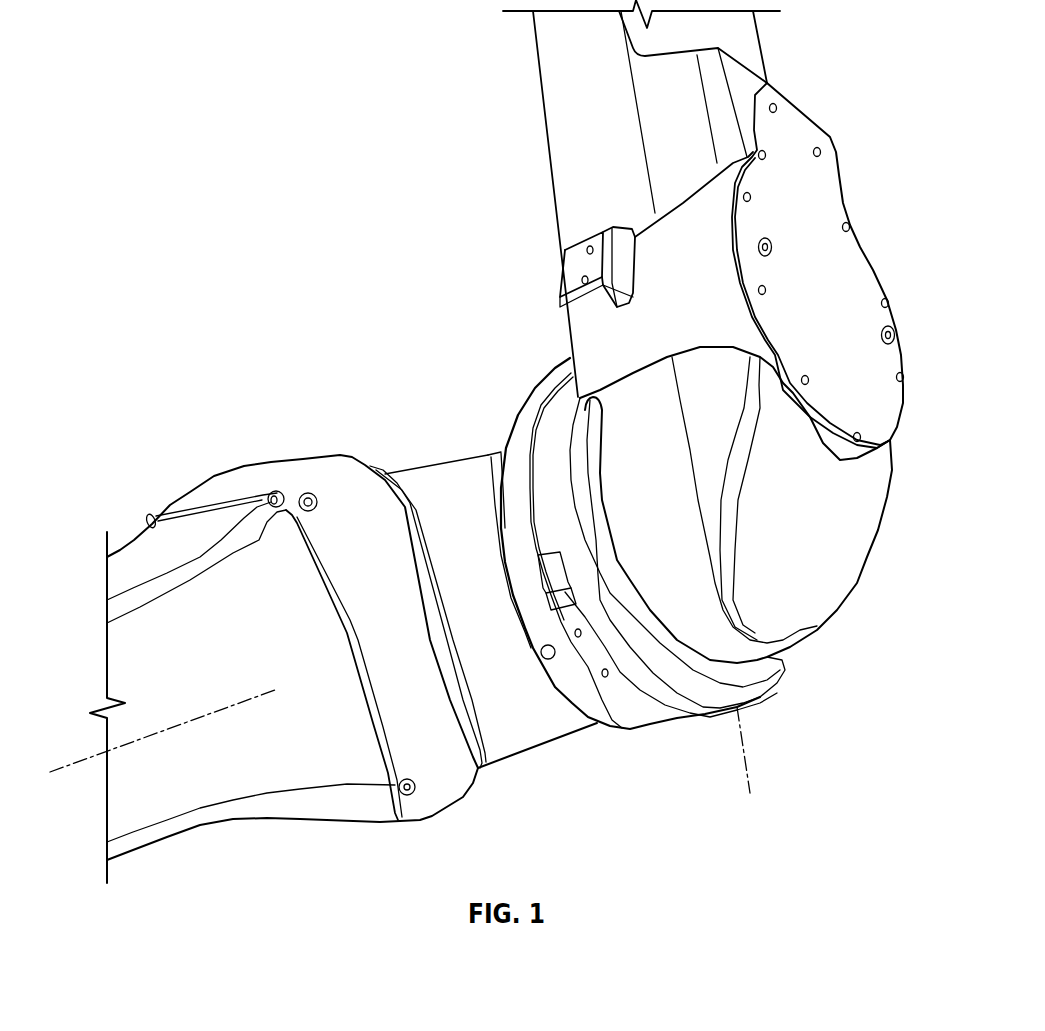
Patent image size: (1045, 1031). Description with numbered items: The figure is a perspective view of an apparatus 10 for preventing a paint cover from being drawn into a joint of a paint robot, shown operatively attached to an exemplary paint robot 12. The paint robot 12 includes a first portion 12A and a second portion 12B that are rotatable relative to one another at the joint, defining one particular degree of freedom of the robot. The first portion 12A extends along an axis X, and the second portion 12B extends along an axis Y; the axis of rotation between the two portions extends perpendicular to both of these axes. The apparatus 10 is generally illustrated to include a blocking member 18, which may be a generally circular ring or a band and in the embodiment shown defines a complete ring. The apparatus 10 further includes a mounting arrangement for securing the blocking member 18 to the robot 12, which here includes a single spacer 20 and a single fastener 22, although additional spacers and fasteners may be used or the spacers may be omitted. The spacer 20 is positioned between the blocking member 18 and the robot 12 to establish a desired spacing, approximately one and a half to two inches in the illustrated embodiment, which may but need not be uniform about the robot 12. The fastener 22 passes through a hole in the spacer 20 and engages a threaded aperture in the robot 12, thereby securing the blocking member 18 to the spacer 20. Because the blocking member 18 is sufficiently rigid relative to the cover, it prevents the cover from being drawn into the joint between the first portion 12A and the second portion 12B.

The apparatus 10 is at (713, 445).
The paint robot 12 is at (866, 548).
The first portion 12A is at (837, 610).
The second portion 12B is at (415, 467).
The blocking member 18 is at (587, 702).
The spacer 20 is at (615, 673).
The fastener 22 is at (543, 657).
The axis X is at (750, 767).
The axis Y is at (183, 727).